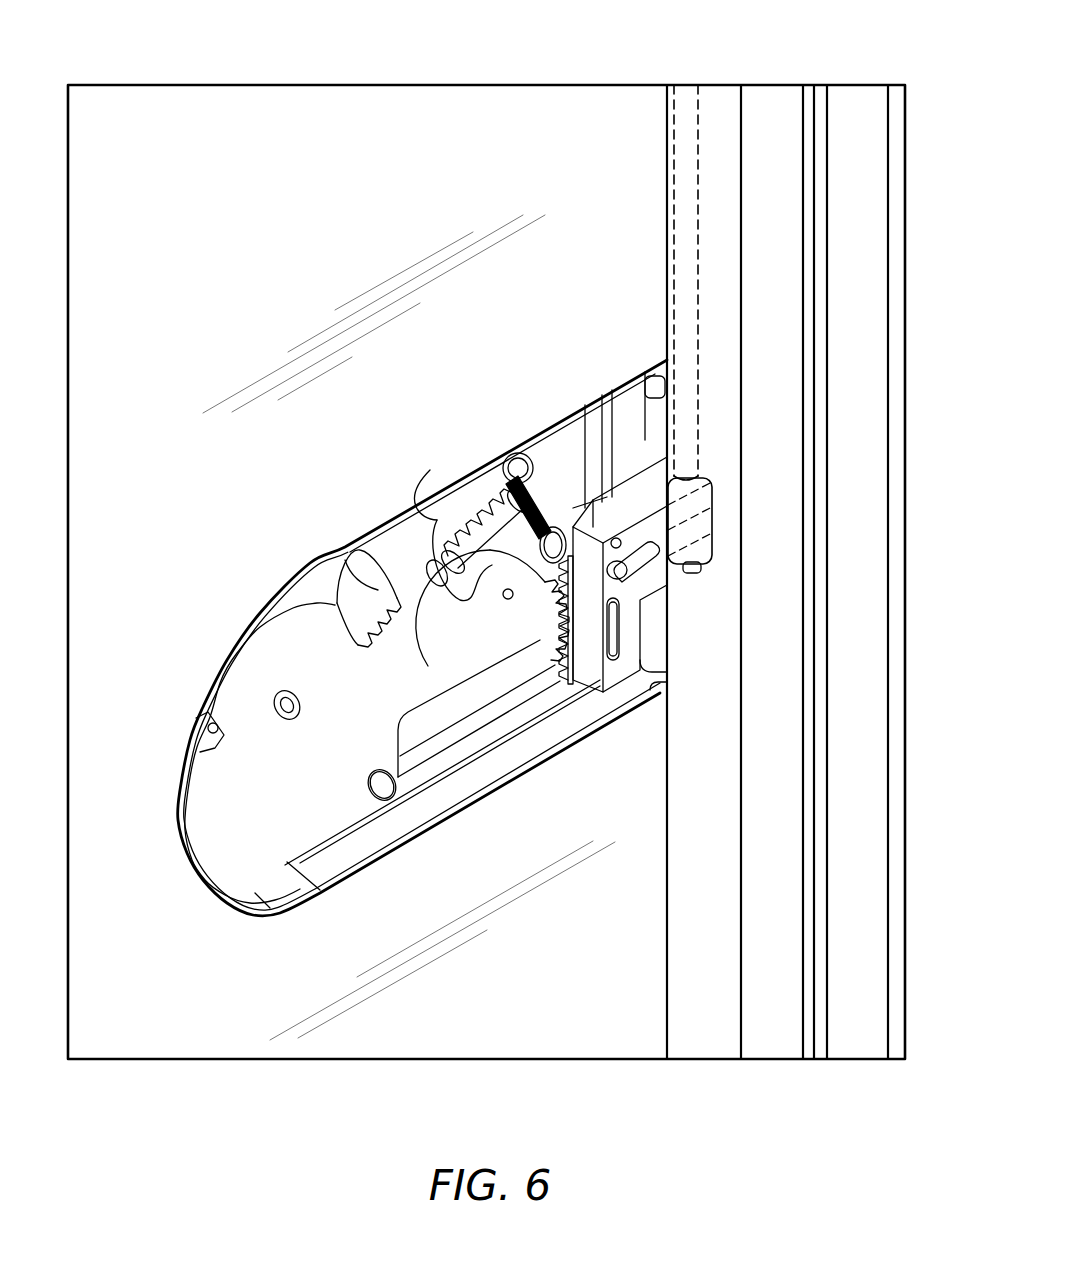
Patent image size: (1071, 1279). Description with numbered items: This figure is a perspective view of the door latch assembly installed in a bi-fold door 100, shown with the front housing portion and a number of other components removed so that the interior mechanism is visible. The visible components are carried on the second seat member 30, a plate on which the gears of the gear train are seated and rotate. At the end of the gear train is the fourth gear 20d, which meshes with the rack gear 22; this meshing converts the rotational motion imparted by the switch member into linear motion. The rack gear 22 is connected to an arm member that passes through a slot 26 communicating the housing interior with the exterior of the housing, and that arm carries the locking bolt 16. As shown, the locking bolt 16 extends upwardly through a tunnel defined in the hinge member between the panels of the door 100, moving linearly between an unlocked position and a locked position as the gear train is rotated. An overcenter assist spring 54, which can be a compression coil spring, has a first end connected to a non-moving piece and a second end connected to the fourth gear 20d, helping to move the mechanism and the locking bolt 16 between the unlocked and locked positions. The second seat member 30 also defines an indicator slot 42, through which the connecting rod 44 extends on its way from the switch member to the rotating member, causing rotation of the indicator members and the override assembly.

The bi-fold door 100 is at (322, 208).
The locking bolt 16 is at (692, 123).
The slot 26 is at (655, 440).
The overcenter assist spring 54 is at (543, 497).
The fourth gear 20d is at (483, 552).
The indicator slot 42 is at (340, 587).
The connecting rod 44 is at (215, 746).
The second seat member 30 is at (264, 796).
The rack gear 22 is at (545, 660).